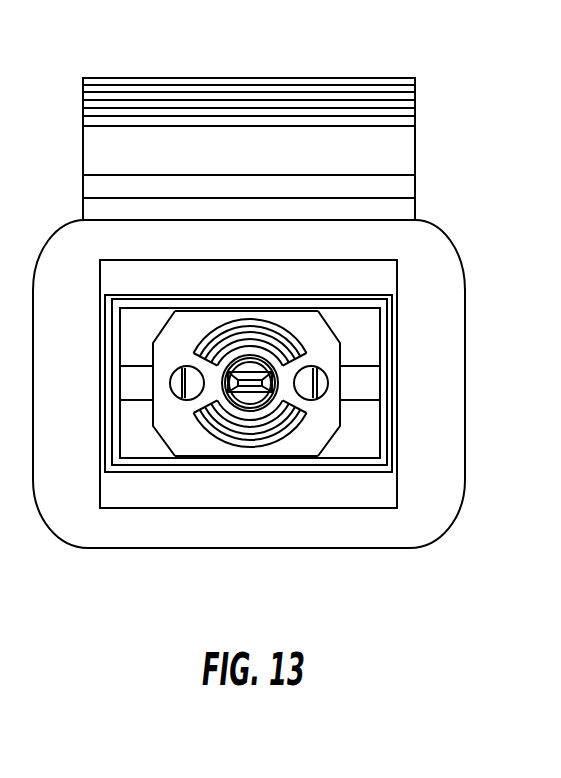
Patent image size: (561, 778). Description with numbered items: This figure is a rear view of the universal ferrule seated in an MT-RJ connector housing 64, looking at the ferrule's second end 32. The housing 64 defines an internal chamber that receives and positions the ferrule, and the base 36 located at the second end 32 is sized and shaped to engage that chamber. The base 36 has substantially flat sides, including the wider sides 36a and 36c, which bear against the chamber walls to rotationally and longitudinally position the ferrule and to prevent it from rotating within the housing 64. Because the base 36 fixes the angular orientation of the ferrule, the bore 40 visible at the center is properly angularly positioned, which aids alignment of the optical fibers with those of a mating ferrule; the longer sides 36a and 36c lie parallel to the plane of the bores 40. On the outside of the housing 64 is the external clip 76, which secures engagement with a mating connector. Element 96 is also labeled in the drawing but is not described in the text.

The external clip 76 is at (415, 107).
The housing 64 is at (445, 448).
The second end 32 is at (323, 433).
The base 36 is at (330, 358).
The side 36a is at (303, 310).
The side 36c is at (313, 460).
The bore 40 is at (232, 384).
The screw 96 is at (181, 392).